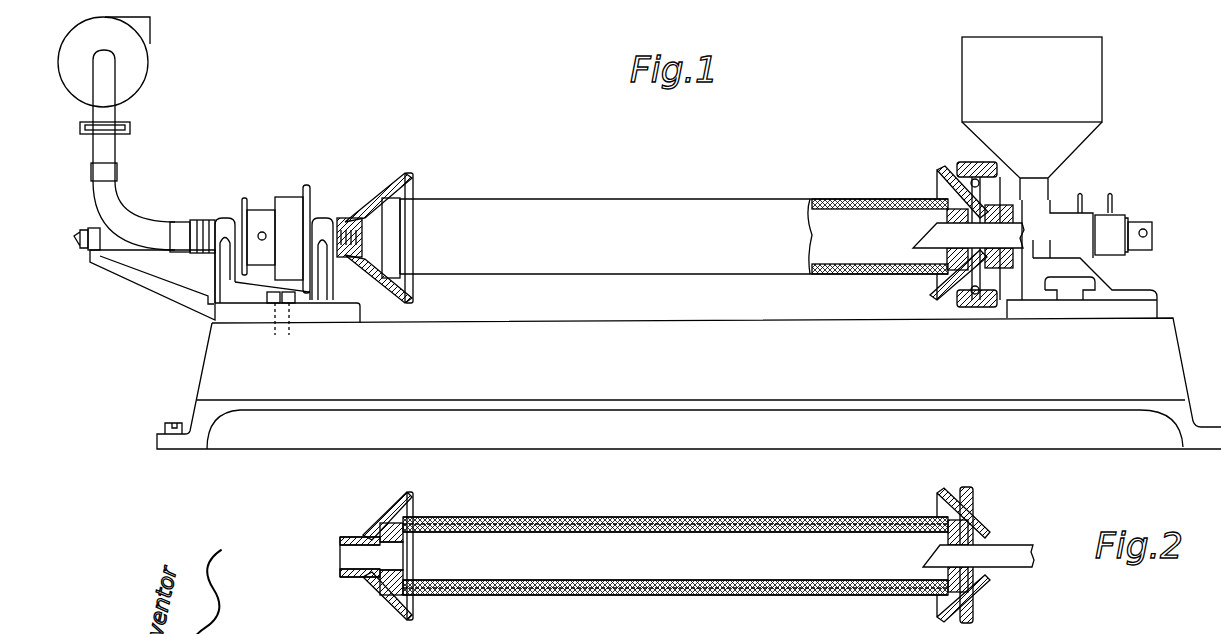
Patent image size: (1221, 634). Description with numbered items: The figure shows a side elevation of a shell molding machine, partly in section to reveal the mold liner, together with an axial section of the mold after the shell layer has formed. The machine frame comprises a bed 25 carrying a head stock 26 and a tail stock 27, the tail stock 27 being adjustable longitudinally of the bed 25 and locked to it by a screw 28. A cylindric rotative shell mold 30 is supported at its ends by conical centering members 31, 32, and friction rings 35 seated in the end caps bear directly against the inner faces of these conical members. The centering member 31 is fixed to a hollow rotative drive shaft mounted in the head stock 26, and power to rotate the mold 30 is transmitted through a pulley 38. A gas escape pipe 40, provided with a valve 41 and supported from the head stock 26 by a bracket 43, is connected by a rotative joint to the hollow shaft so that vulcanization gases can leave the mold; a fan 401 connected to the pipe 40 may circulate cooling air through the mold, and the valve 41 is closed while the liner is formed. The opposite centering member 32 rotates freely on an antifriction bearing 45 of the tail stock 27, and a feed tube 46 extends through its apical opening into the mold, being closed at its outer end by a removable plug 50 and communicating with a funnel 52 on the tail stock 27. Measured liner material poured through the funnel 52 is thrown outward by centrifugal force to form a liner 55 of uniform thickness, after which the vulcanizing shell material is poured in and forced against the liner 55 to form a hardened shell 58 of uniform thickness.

In FIG. 1, the bed 25 is at (683, 336).
In FIG. 1, the head stock 26 is at (232, 312).
In FIG. 1, the tail stock 27 is at (1112, 287).
In FIG. 1, the screw 28 is at (1068, 288).
In FIG. 1, the shell mold 30 is at (552, 199).
In FIG. 2, the shell mold 30 is at (462, 512).
In FIG. 1, the conical centering member 31 is at (399, 187).
In FIG. 1, the conical centering member 32 is at (938, 170).
In FIG. 2, the conical centering member 32 is at (963, 555).
In FIG. 1, the friction ring 35 is at (388, 213).
In FIG. 1, the pulley 38 is at (262, 215).
In FIG. 1, the pipe 40 is at (115, 150).
In FIG. 1, the fan 401 is at (135, 58).
In FIG. 1, the valve 41 is at (127, 122).
In FIG. 1, the bracket 43 is at (148, 280).
In FIG. 1, the antifriction bearing 45 is at (975, 305).
In FIG. 1, the feed tube 46 is at (933, 230).
In FIG. 2, the feed tube 46 is at (978, 556).
In FIG. 1, the plug 50 is at (1141, 222).
In FIG. 1, the funnel 52 is at (1102, 105).
In FIG. 1, the liner 55 is at (862, 199).
In FIG. 2, the liner 55 is at (608, 515).
In FIG. 2, the shell 58 is at (805, 515).